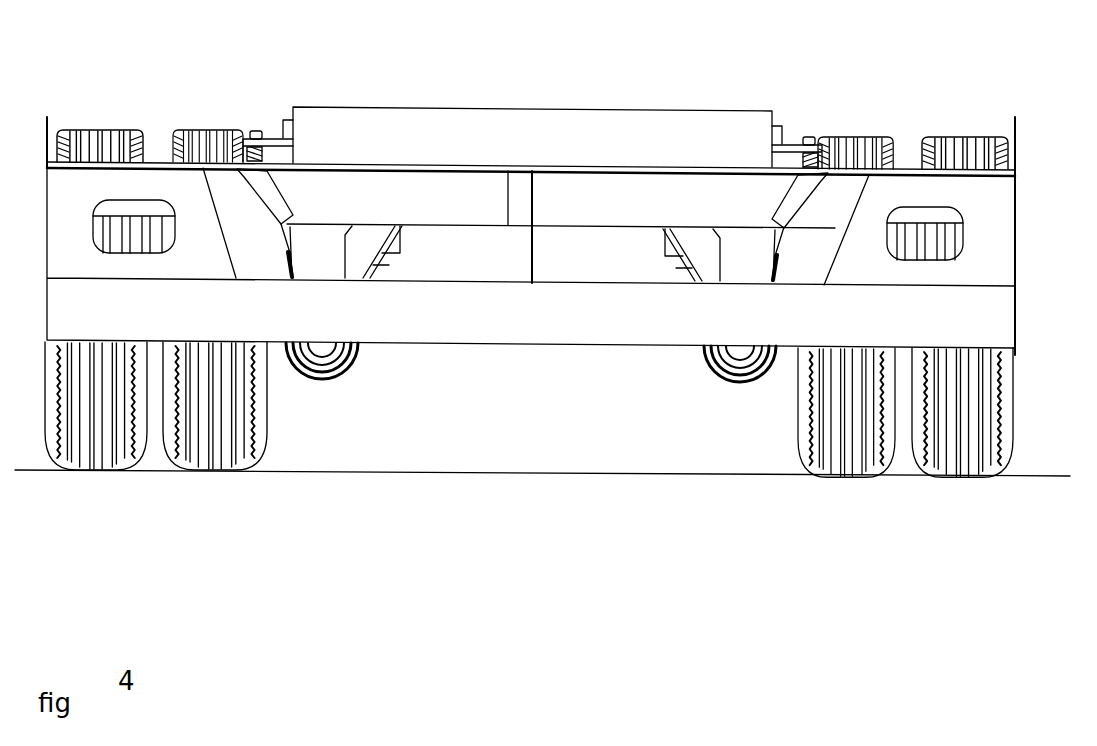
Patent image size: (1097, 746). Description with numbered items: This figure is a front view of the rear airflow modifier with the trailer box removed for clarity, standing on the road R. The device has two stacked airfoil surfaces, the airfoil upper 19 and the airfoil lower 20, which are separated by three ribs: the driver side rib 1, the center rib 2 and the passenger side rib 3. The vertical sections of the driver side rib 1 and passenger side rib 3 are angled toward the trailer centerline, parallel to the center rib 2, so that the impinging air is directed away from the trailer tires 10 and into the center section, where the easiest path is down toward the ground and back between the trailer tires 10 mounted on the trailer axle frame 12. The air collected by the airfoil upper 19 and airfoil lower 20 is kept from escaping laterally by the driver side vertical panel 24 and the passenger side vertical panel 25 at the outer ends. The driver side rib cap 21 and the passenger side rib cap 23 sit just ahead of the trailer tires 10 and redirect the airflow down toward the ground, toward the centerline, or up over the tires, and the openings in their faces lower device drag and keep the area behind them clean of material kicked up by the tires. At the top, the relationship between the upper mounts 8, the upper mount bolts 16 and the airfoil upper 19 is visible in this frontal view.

The driver side rib 1 is at (818, 228).
The center rib 2 is at (533, 242).
The passenger side rib 3 is at (250, 220).
The upper mount 8 is at (282, 132).
The trailer tires 10 is at (197, 133).
The trailer axle frame (bogey) 12 is at (575, 137).
The bar nut 16 is at (254, 132).
The airfoil upper 19 is at (438, 192).
The airfoil lower 20 is at (693, 315).
The driver side rib cap 21 is at (985, 268).
The passenger side rib cap 23 is at (200, 255).
The driver side vertical panel 24 is at (1020, 143).
The passenger side vertical panel 25 is at (50, 120).
The road R is at (1072, 447).